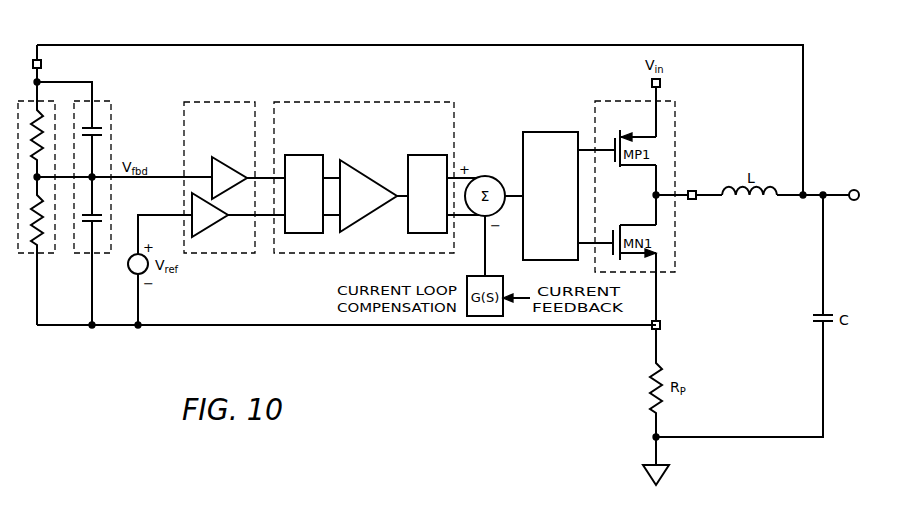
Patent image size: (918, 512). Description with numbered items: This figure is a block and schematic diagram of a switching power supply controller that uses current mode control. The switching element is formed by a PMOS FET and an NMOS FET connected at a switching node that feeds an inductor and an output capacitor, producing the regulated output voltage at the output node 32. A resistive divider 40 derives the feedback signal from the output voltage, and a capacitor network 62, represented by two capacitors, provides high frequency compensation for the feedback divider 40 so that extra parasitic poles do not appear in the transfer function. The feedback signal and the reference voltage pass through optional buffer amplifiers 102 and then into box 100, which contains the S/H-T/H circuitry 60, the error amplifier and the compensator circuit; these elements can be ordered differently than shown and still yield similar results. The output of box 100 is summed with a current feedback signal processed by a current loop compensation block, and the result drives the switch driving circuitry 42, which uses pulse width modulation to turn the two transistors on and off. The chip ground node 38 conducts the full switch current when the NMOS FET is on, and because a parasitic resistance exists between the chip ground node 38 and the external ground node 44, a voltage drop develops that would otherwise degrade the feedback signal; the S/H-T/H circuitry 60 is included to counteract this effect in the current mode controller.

The output node 32 is at (836, 195).
The chip ground node 38 is at (662, 328).
The resistive divider 40 is at (45, 254).
The switch driving circuitry 42 is at (560, 132).
The external ground node 44 is at (650, 438).
The S/H-T/H circuitry 60 is at (303, 155).
The capacitor network 62 is at (112, 120).
The box 100 is at (376, 160).
The buffer amplifiers 102 is at (207, 102).